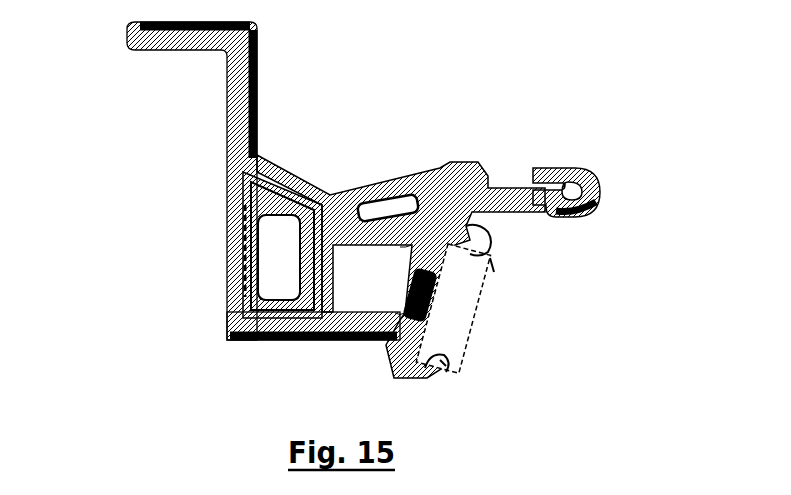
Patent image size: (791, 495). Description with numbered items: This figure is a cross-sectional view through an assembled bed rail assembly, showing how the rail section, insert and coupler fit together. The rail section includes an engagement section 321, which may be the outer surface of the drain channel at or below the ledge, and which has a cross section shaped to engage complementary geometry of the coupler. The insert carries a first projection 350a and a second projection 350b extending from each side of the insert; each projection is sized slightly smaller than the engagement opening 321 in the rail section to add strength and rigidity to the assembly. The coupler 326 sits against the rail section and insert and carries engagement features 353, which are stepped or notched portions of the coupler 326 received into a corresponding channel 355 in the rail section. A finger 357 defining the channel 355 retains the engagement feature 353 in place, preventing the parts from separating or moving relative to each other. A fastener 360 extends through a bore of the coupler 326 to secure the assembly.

The engagement section 321 is at (280, 243).
The first projection 350a is at (228, 181).
The second projection 350b is at (252, 268).
The coupler 326 is at (478, 291).
The engagement feature 353 is at (567, 336).
The channel 355 is at (480, 231).
The finger 357 is at (494, 270).
The fastener 360 is at (430, 299).